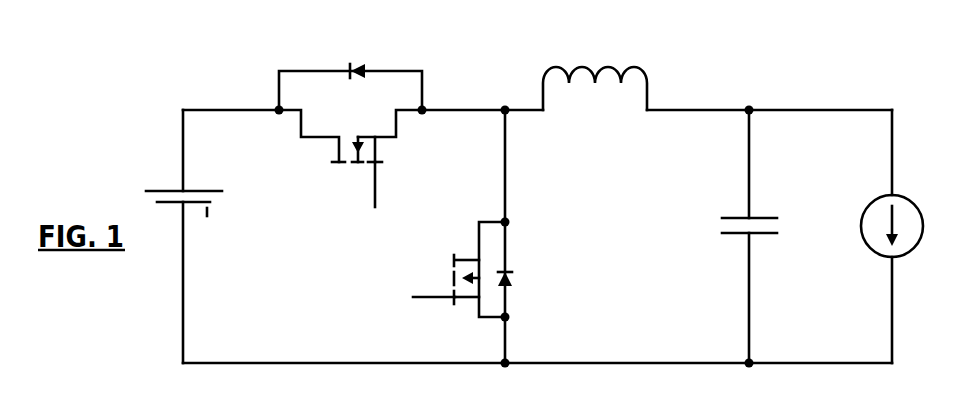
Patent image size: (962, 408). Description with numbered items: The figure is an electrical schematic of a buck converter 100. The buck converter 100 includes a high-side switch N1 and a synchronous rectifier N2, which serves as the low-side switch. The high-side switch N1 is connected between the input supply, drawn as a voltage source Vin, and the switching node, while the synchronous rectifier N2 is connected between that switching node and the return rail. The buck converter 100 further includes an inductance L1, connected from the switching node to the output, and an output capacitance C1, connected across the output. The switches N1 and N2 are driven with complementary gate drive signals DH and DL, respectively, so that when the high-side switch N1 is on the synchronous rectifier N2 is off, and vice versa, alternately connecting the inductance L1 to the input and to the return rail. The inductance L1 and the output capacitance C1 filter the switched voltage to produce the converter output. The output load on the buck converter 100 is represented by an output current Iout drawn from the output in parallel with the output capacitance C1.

The buck converter 100 is at (81, 118).
The high-side switch N1 is at (341, 104).
The synchronous rectifier N2 is at (506, 270).
The inductance L1 is at (609, 75).
The output capacitance C1 is at (742, 237).
The gate drive signal DH is at (378, 201).
The gate drive signal DL is at (413, 300).
The input voltage source Vin is at (174, 236).
The output load Iout is at (908, 236).